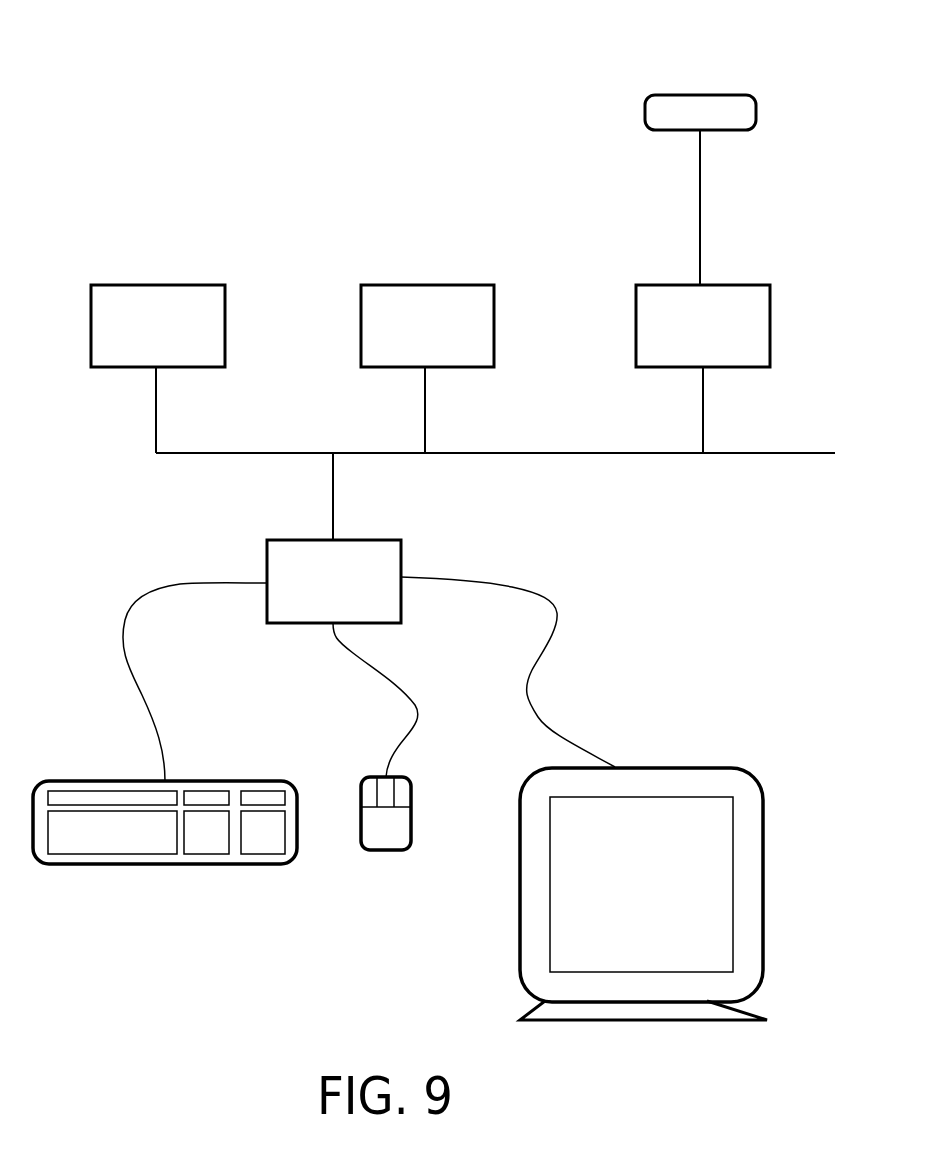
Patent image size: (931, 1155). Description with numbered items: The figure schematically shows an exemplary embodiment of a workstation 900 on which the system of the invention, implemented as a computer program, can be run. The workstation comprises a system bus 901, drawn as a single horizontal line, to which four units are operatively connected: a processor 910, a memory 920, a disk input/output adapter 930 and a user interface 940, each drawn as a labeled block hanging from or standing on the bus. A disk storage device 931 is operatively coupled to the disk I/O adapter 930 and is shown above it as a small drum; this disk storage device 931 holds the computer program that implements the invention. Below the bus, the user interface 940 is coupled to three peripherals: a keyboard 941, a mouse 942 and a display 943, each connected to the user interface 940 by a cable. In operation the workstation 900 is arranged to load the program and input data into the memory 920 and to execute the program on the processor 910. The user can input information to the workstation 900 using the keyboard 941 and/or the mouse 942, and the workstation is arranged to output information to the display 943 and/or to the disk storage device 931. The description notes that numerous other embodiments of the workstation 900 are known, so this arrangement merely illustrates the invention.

The workstation 900 is at (196, 88).
The system bus 901 is at (157, 454).
The processor 910 is at (133, 339).
The memory 920 is at (404, 339).
The disk input/output adapter 930 is at (679, 339).
The disk storage device 931 is at (645, 111).
The user interface 940 is at (311, 593).
The keyboard 941 is at (158, 865).
The mouse 942 is at (387, 851).
The display 943 is at (697, 768).